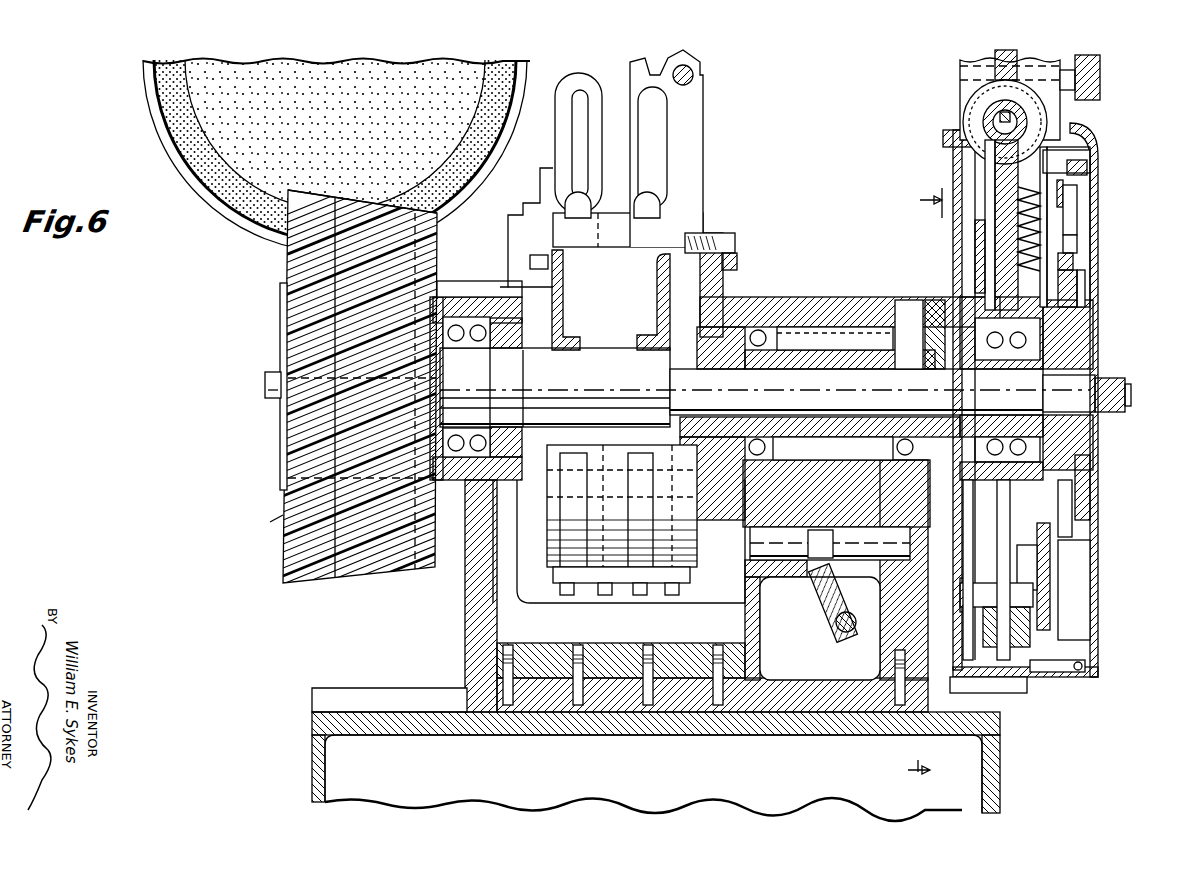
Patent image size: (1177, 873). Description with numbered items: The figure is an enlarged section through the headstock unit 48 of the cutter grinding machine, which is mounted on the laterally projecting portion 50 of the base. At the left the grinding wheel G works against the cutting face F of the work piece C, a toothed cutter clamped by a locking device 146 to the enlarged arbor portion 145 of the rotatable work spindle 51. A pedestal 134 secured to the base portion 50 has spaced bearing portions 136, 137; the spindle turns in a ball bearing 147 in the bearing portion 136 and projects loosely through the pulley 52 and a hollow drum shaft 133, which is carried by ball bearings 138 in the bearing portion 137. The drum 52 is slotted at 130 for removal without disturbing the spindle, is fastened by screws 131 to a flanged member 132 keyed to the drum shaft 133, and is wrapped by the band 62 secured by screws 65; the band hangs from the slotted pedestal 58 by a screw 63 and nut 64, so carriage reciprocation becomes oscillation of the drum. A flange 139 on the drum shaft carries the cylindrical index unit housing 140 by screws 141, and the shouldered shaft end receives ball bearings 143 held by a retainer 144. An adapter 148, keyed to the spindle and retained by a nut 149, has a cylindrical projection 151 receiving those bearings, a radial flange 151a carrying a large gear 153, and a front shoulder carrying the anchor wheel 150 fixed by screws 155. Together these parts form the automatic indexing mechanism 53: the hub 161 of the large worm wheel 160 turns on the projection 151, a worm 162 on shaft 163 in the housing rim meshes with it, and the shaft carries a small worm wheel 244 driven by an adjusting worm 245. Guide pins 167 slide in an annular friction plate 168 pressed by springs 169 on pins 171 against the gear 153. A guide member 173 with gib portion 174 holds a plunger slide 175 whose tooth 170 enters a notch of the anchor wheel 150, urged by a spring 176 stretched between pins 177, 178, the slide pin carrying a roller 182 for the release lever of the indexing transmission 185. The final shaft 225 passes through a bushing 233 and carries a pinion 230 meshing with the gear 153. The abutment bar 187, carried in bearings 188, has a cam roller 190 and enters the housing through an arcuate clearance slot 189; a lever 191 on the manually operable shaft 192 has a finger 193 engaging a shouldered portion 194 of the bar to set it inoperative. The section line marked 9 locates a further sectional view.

The grinding wheel G is at (218, 192).
The cutting face F is at (296, 246).
The work piece C is at (294, 270).
The locking device 146 is at (274, 399).
The arbor portion 145 is at (280, 518).
The work spindle 51 is at (767, 387).
The nut 149 is at (1122, 378).
The bearing portion 136 is at (466, 302).
The ball bearing 147 is at (454, 286).
The slot 130 is at (550, 538).
The pulley 52 is at (682, 228).
The pedestal 58 is at (696, 176).
The nut 64 is at (655, 190).
The screw 63 is at (651, 200).
The screws 131 is at (736, 242).
The flanged member 132 is at (735, 268).
The drum shaft 133 is at (808, 298).
The ball bearings 138 is at (850, 298).
The bearing portion 137 is at (872, 298).
The screws 141 is at (922, 298).
The flange 139 is at (934, 300).
The screws 155 is at (1076, 334).
The adapter 148 is at (1096, 356).
The retainer 144 is at (1066, 420).
The pedestal 134 is at (465, 658).
The band 62 is at (638, 500).
The screws 65 is at (602, 587).
The bar 187 is at (855, 524).
The shouldered portion 194 is at (828, 530).
The shaft 192 is at (829, 640).
The cam roller 190 is at (856, 624).
The bearings 188 is at (782, 578).
The finger 193 is at (820, 588).
The lever 191 is at (816, 628).
The clearance slot 189 is at (886, 576).
The friction plate 168 is at (930, 585).
The laterally projecting portion 50 is at (1002, 768).
The section line 9- 9 is at (918, 482).
The index unit housing 140 is at (953, 160).
The roller 182 is at (1120, 168).
The worm 245 is at (955, 67).
The small worm wheel 244 is at (990, 78).
The worm 162 is at (985, 120).
The shaft 163 is at (1038, 118).
The gear 153 is at (995, 214).
The tooth 170 is at (1046, 232).
The pins 171 is at (978, 235).
The spring 176 is at (1040, 205).
The guide member 173 is at (1080, 140).
The pin 177 is at (1085, 164).
The plunger slide 175 is at (1063, 186).
The gib portion 174 is at (1075, 194).
The pin 178 is at (1115, 262).
The automatic indexing mechanism 53 is at (1091, 244).
The springs 169 is at (1075, 258).
The radial flange 151a is at (1085, 272).
The cylindrical projection 151 is at (1078, 290).
The ball bearings 143 is at (1075, 476).
The hub 161 is at (1072, 514).
The anchor wheel 150 is at (1050, 532).
The guide pins 167 is at (1050, 553).
The final shaft 225 is at (1033, 586).
The bushing 233 is at (1040, 613).
The indexing transmission 185 is at (1078, 616).
The worm wheel 160 is at (1000, 683).
The pinion 230 is at (1015, 690).
The headstock unit 48 is at (1044, 696).